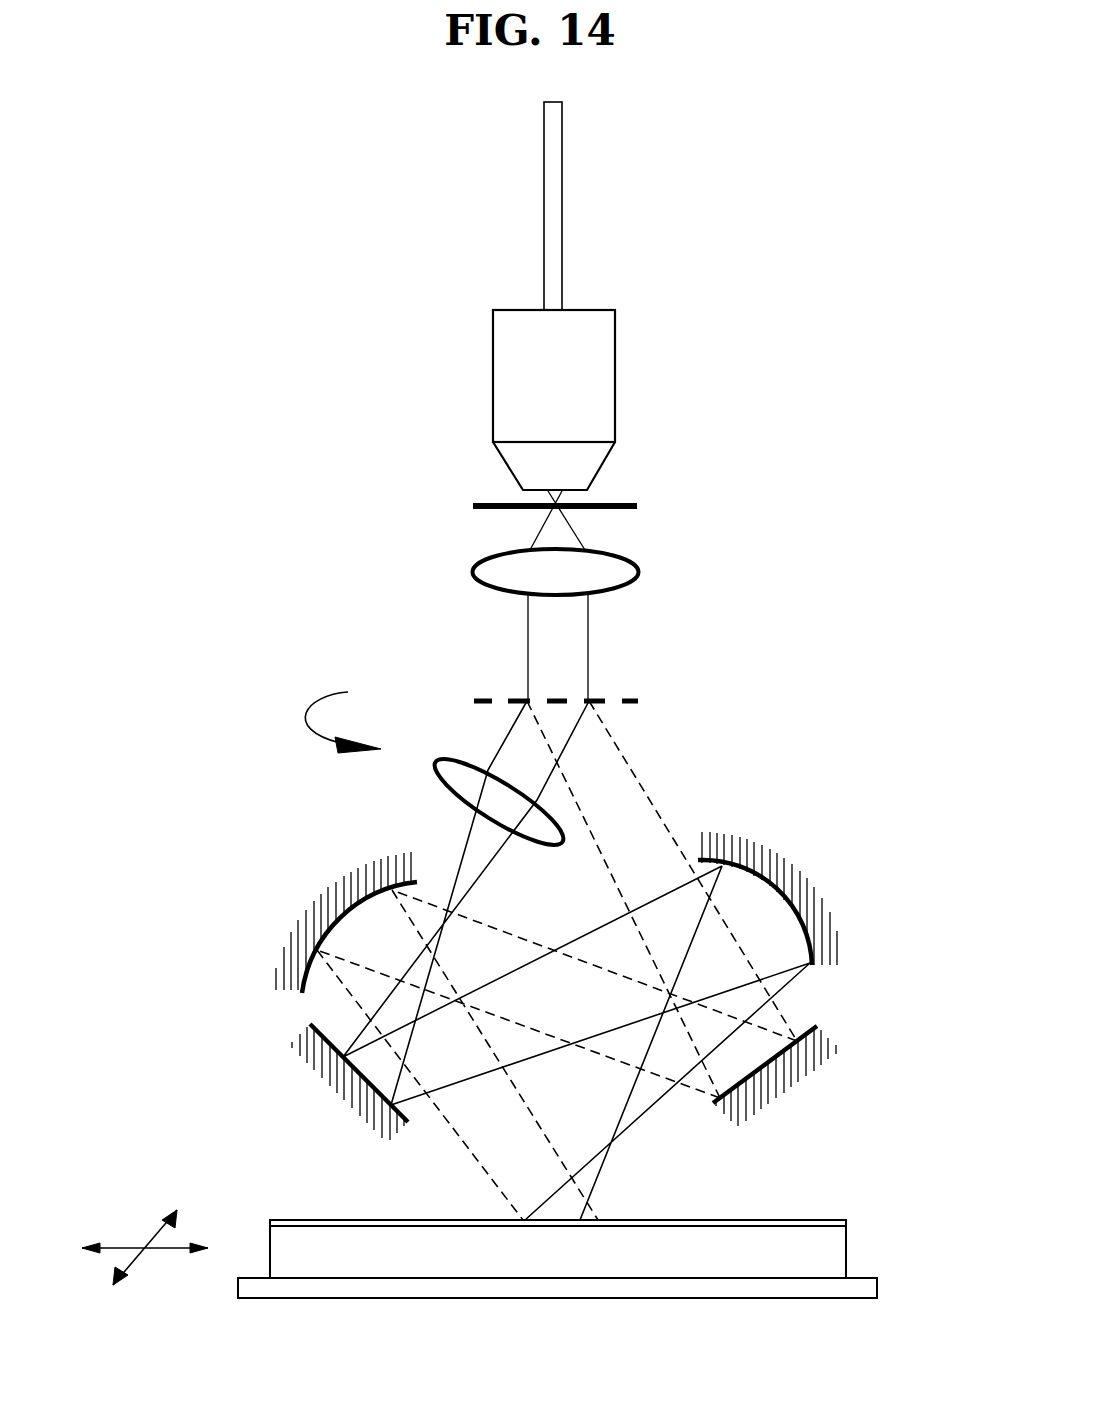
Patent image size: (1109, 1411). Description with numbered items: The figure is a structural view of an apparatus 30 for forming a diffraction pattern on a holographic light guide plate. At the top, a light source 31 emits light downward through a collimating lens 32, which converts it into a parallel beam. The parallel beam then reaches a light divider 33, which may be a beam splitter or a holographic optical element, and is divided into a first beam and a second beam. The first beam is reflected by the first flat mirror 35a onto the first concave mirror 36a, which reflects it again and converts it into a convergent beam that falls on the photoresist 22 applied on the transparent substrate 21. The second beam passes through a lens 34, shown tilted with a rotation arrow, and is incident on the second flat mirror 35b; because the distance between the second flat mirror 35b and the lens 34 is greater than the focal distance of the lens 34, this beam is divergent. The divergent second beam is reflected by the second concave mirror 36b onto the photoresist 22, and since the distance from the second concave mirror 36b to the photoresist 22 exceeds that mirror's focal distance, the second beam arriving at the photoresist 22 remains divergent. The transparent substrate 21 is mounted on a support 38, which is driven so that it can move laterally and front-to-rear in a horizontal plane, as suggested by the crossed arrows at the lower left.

The apparatus 30 is at (941, 1089).
The light source 31 is at (445, 312).
The collimating lens 32 is at (473, 572).
The light divider 33 is at (479, 699).
The lens 34 is at (437, 783).
The first flat mirror 35a is at (777, 1078).
The second flat mirror 35b is at (333, 1075).
The first concave mirror 36a is at (318, 927).
The second concave mirror 36b is at (800, 908).
The transparent substrate 21 is at (848, 1247).
The photoresist 22 is at (848, 1222).
The support 38 is at (875, 1290).